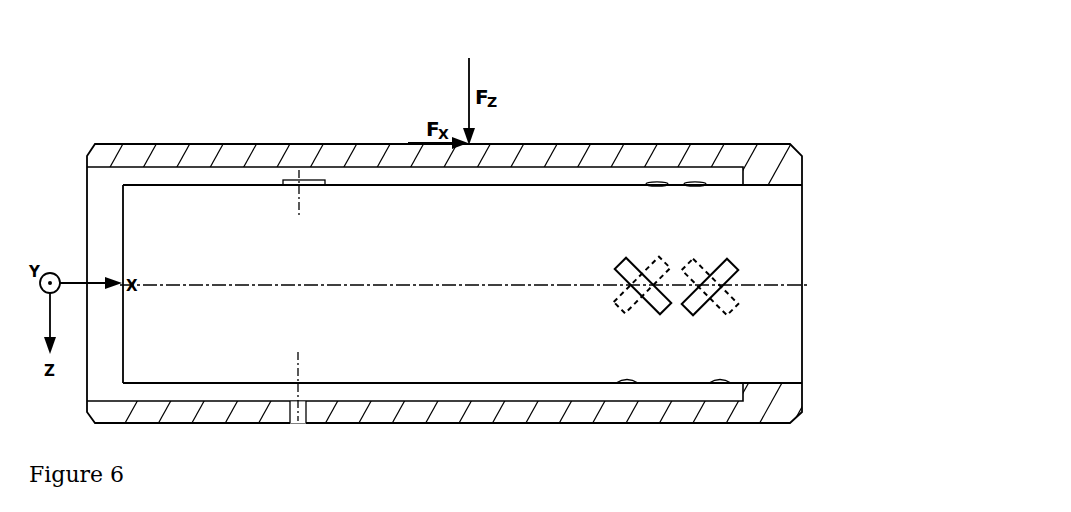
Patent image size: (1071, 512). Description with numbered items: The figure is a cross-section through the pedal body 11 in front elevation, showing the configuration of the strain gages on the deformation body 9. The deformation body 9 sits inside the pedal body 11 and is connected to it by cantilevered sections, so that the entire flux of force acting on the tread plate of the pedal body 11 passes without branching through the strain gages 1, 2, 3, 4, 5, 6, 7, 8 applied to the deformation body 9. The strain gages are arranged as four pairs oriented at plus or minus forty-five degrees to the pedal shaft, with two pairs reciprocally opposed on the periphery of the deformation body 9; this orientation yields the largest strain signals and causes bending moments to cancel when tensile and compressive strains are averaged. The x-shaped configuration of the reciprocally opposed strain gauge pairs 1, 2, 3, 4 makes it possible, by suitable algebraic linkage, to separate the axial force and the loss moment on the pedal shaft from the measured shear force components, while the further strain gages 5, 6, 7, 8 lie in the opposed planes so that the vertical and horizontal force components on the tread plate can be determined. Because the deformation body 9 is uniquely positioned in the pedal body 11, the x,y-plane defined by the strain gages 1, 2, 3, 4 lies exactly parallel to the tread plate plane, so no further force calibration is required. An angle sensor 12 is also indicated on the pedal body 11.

The strain gage 1 is at (643, 281).
The strain gage 2 is at (710, 281).
The strain gage 3 is at (710, 297).
The strain gage 4 is at (641, 296).
The strain gage 5 is at (652, 196).
The strain gage 6 is at (701, 196).
The strain gage 7 is at (627, 373).
The strain gage 8 is at (719, 373).
The deformation body 9 is at (147, 209).
The pedal body 11 is at (178, 152).
The angle sensor 12 is at (307, 182).